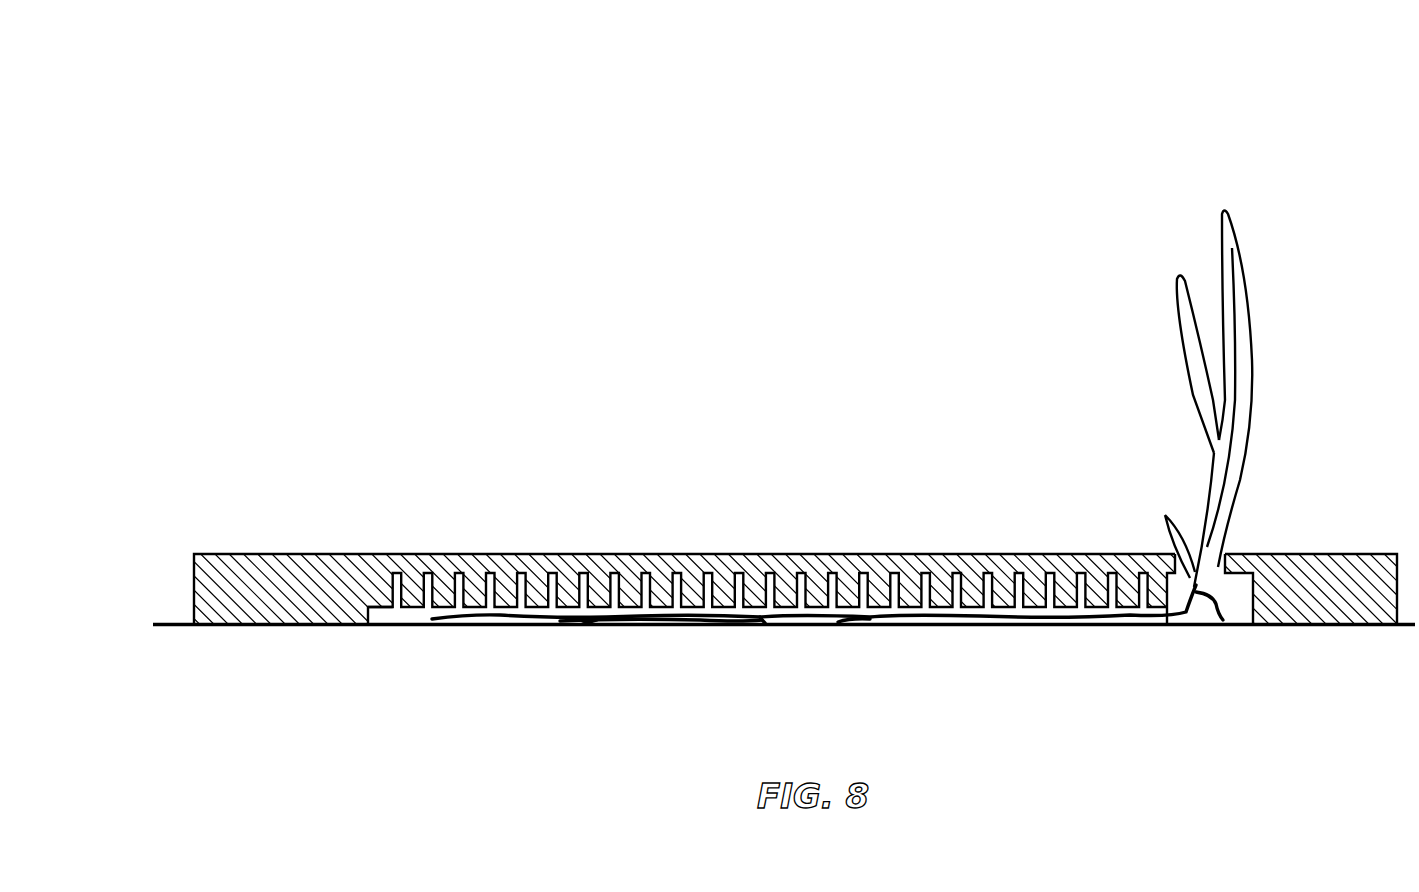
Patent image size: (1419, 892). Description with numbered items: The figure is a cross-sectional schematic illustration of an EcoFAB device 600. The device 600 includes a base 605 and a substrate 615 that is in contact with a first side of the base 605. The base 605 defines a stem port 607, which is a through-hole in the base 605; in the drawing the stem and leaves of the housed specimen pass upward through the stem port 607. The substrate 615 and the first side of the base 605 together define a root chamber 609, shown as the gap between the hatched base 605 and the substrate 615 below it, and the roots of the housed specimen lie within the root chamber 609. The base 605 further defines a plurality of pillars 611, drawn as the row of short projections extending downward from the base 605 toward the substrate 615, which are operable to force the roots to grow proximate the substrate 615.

The EcoFAB device 600 is at (1278, 102).
The base 605 is at (290, 573).
The stem port 607 is at (1217, 563).
The root chamber 609 is at (388, 612).
The pillars 611 is at (863, 586).
The substrate 615 is at (177, 628).